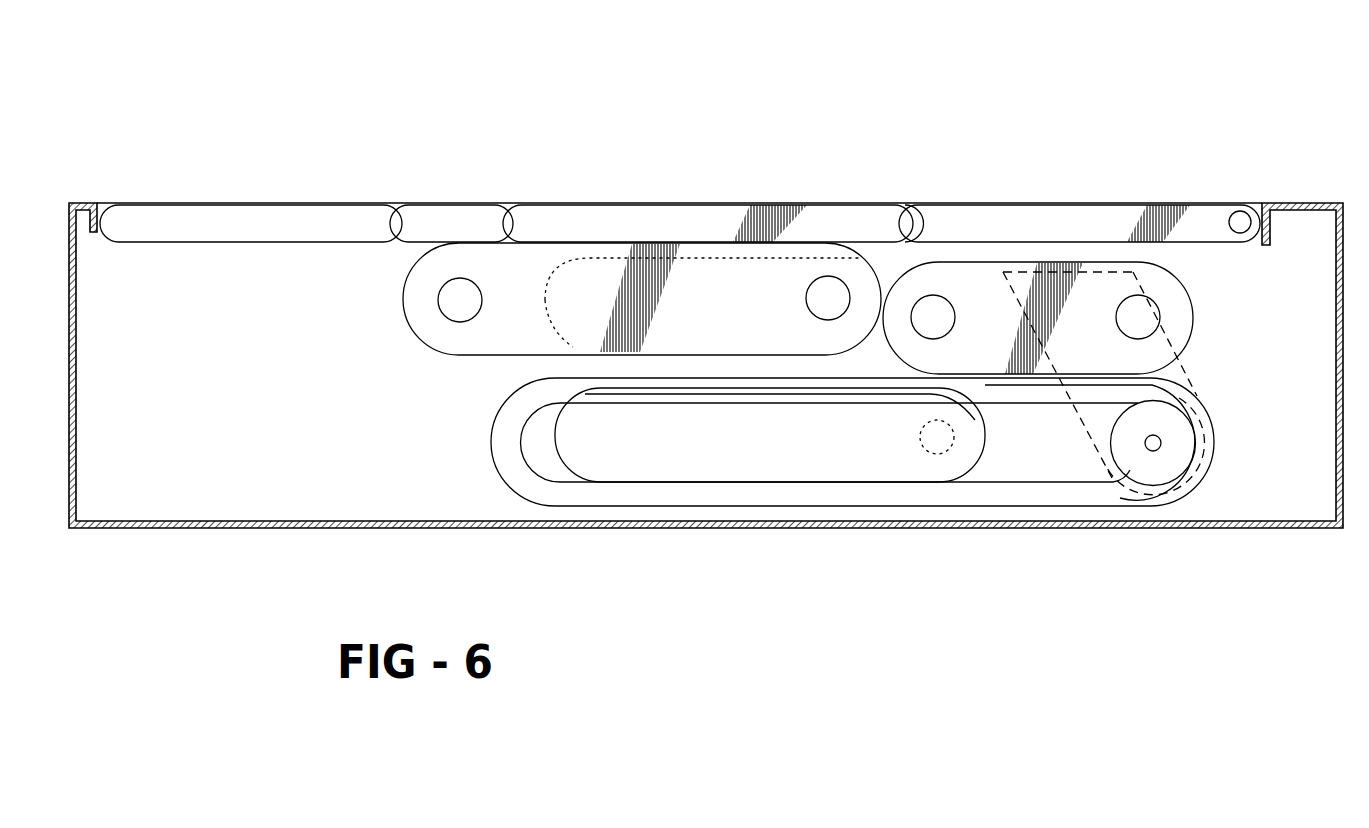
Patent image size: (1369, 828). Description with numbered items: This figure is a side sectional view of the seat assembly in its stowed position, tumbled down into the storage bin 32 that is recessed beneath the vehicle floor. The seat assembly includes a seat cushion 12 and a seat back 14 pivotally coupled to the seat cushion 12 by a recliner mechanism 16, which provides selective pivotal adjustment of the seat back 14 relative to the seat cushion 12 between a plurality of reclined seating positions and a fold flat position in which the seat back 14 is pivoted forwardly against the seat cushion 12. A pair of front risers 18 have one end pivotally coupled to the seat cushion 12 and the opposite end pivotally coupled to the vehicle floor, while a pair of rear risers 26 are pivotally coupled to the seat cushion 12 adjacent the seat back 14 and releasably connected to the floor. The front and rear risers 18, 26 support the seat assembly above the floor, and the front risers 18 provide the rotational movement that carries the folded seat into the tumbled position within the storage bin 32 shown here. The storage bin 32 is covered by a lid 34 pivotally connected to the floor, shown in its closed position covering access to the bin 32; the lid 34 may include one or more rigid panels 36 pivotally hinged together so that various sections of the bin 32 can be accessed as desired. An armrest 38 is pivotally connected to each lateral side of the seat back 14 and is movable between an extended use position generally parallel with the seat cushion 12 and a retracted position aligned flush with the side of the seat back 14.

The seat cushion 12 is at (550, 298).
The seat back 14 is at (575, 492).
The recliner mechanism 16 is at (1123, 462).
The front risers 18 is at (497, 268).
The rear risers 26 is at (977, 290).
The storage bin 32 is at (1336, 487).
The lid 34 is at (1035, 213).
The rigid panels 36 is at (172, 220).
The armrest 38 is at (752, 452).